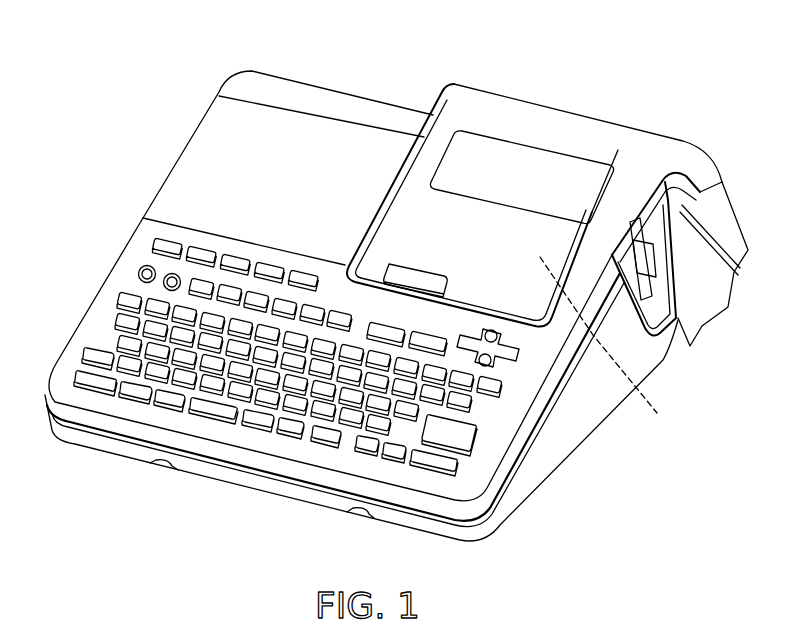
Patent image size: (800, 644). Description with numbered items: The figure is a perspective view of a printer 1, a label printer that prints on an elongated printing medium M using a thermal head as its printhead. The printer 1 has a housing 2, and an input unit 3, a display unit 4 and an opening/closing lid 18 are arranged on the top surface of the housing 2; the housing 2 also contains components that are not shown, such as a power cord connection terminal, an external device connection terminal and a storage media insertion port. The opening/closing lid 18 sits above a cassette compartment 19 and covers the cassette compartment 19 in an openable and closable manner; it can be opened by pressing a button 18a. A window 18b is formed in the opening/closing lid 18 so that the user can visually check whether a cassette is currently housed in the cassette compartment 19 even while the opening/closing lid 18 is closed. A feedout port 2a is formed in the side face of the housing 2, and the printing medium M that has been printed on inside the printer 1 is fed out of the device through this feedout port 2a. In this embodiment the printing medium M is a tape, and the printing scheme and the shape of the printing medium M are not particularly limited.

The printer 1 is at (80, 104).
The housing 2 is at (120, 447).
The feedout port 2a is at (676, 313).
The input unit 3 is at (503, 421).
The display unit 4 is at (170, 195).
The opening/closing lid 18 is at (524, 117).
The button 18a is at (410, 273).
The window 18b is at (547, 170).
The cassette compartment 19 is at (611, 344).
The printing medium M is at (640, 257).